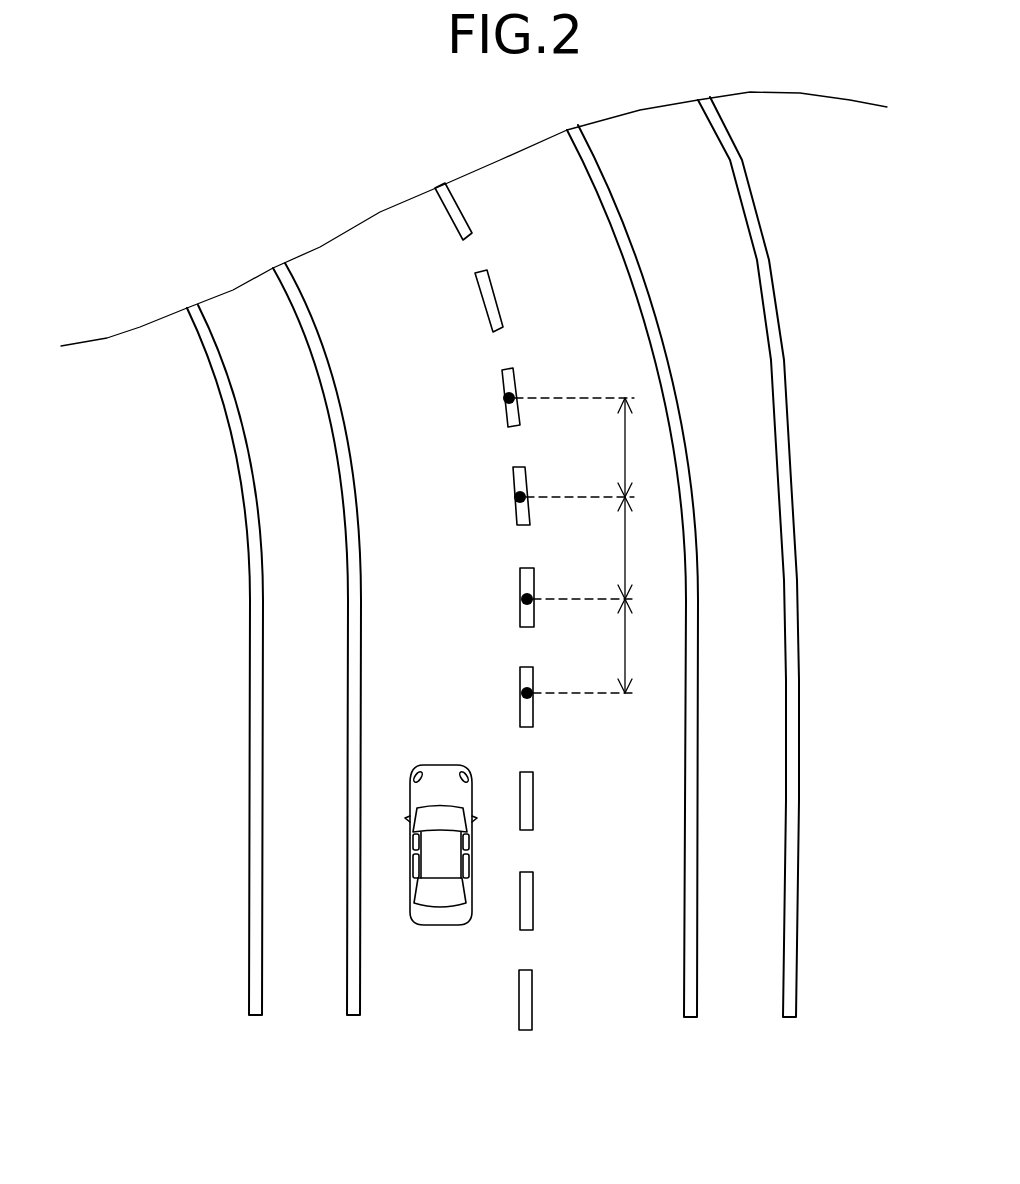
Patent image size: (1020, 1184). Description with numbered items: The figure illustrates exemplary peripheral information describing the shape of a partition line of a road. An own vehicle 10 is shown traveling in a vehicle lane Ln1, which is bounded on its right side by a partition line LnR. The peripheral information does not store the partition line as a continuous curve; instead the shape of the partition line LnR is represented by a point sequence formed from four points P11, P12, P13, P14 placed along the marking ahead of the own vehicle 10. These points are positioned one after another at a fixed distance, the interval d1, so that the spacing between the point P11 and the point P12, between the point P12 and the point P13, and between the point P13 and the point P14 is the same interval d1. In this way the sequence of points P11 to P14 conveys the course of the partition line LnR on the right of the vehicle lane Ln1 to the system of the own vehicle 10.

The own vehicle 10 is at (469, 847).
The point P11 is at (521, 693).
The point P12 is at (521, 599).
The point P13 is at (514, 497).
The point P14 is at (503, 398).
The interval d1 is at (586, 545).
The vehicle lane Ln1 is at (438, 1033).
The partition line LnR is at (526, 1033).